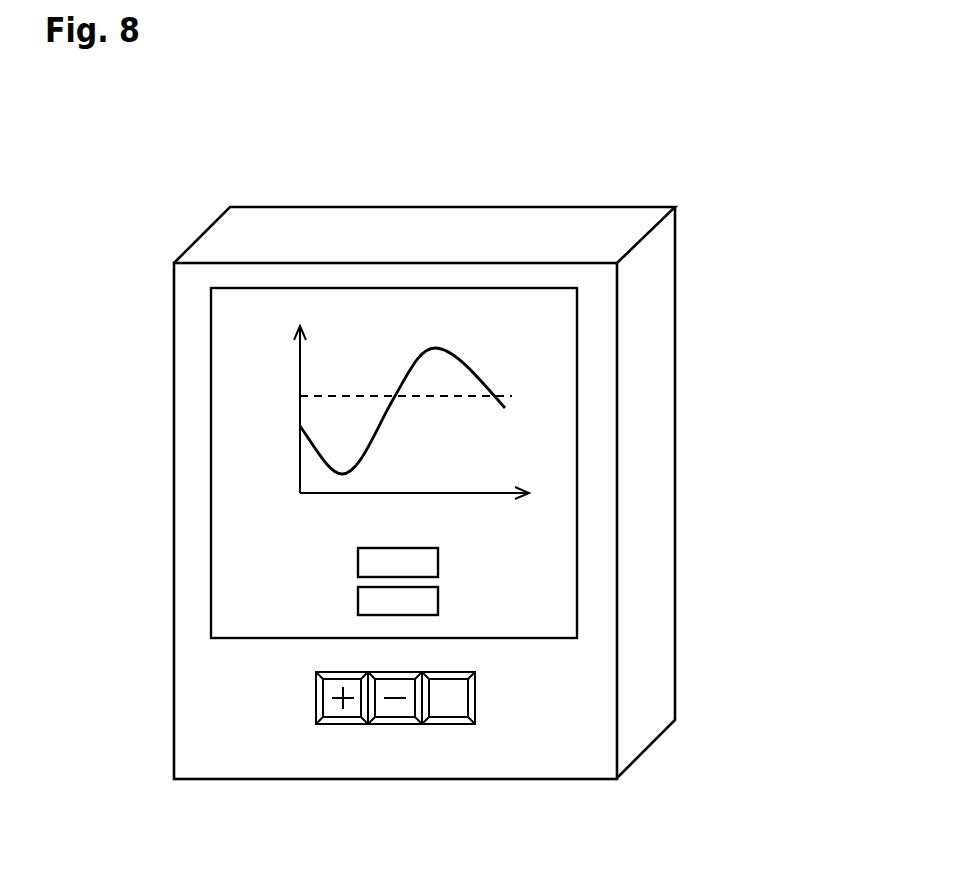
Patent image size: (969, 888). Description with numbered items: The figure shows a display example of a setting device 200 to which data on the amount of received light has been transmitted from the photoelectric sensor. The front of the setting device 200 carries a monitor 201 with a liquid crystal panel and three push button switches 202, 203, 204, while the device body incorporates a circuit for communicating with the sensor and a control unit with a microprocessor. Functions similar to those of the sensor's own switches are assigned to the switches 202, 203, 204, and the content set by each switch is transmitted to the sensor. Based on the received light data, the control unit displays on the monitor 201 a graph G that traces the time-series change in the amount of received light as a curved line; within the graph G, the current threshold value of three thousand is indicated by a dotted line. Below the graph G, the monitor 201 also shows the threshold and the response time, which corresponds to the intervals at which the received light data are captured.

The setting device 200 is at (587, 238).
The monitor 201 is at (557, 340).
The graph G is at (465, 413).
The push button switch 202 is at (343, 725).
The push button switch 203 is at (397, 725).
The push button switch 204 is at (447, 725).